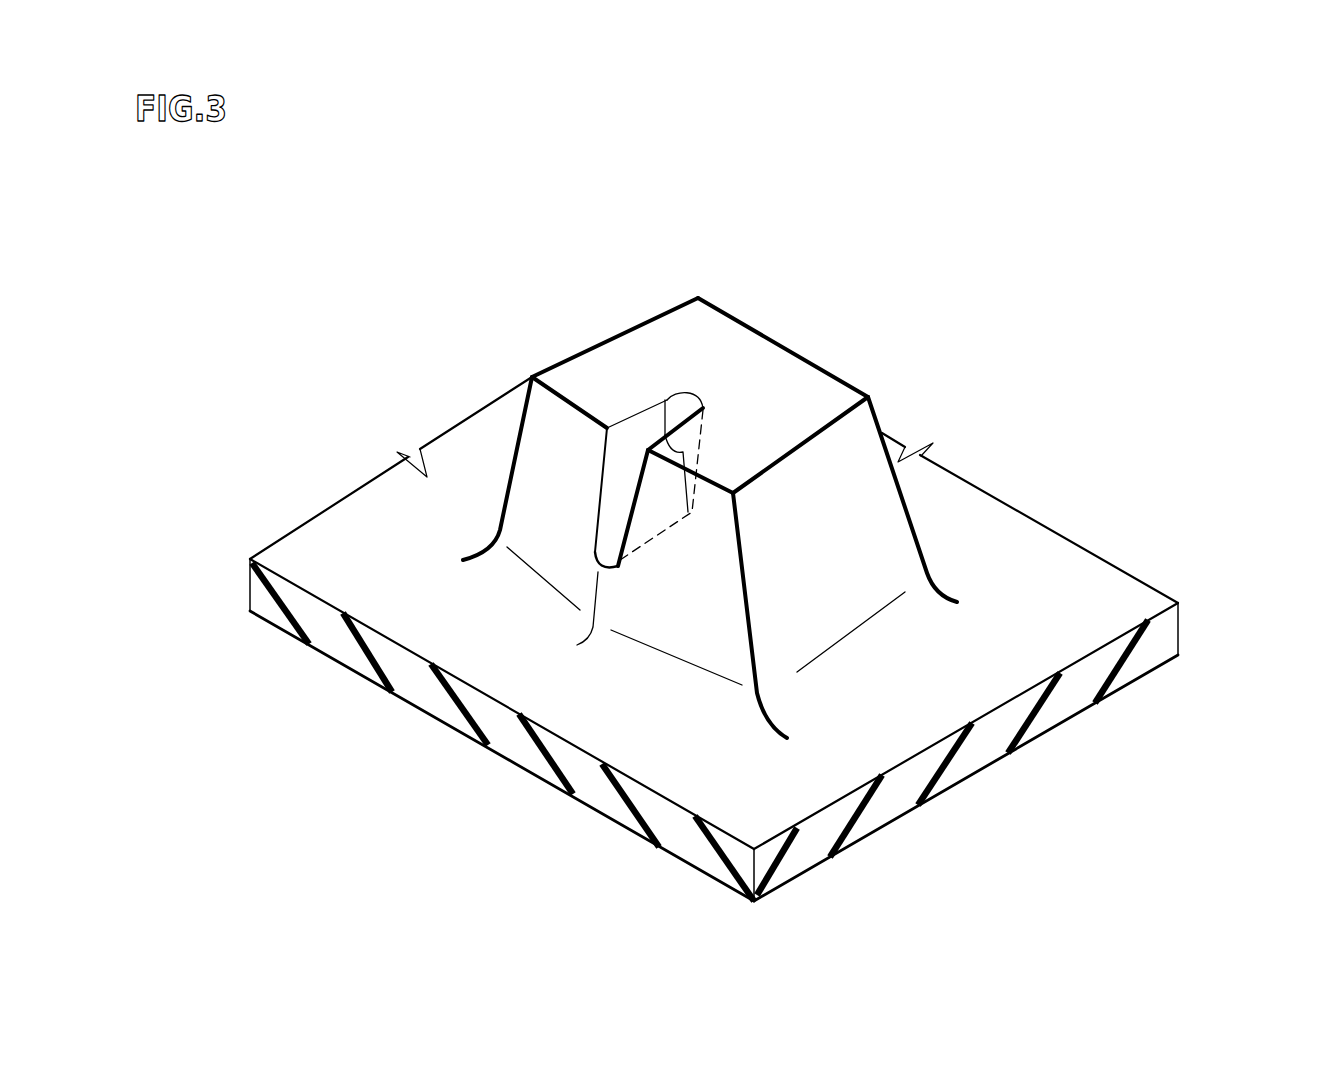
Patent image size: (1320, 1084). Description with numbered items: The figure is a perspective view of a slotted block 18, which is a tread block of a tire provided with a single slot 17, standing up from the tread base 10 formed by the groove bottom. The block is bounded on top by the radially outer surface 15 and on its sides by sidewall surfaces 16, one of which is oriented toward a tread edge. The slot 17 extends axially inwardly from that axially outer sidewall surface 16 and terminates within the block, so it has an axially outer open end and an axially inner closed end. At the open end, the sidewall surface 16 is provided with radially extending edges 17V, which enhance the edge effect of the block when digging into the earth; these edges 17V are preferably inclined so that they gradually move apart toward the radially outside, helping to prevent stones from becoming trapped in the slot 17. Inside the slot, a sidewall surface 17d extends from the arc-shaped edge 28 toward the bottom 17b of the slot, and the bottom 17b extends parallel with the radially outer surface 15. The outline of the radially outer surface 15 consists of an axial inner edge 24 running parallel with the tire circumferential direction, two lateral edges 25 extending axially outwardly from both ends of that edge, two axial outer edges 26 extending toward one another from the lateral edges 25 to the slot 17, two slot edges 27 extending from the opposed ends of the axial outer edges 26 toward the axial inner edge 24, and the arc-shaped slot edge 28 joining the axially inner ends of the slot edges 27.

The tread base 10 is at (1043, 587).
The radially outer surface 15 is at (720, 335).
The sidewall surface 16 is at (530, 476).
The slot 17 is at (565, 572).
The radially extending edges 17V is at (600, 490).
The bottom of the slot 17b is at (612, 562).
The sidewall surface of the slot 17d is at (683, 408).
The slotted block 18 is at (845, 337).
The axial inner edge 24 is at (787, 347).
The lateral edges 25 is at (660, 402).
The axial outer edges 26 is at (563, 398).
The slot edges 27 is at (648, 406).
The arc-shaped slot edge 28 is at (702, 405).